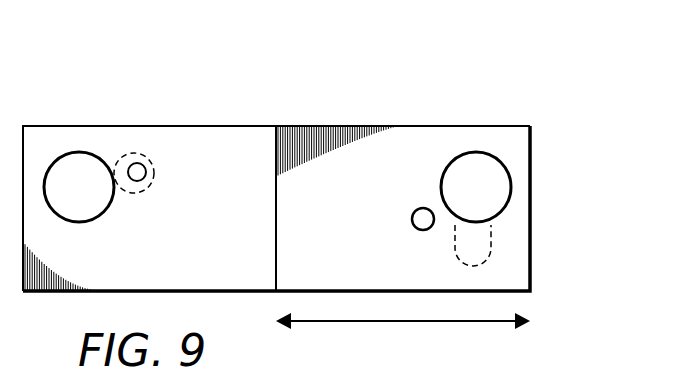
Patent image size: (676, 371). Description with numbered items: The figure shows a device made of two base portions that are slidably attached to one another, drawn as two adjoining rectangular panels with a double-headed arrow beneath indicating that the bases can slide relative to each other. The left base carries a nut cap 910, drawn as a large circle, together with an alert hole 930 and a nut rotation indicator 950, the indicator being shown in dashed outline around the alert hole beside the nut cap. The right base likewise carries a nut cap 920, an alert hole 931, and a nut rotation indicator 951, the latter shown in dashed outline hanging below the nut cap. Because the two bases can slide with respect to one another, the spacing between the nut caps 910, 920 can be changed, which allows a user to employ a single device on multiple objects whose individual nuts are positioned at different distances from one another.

The nut cap 910 is at (52, 160).
The nut cap 920 is at (455, 157).
The alert hole 930 is at (131, 166).
The alert hole 931 is at (413, 212).
The nut rotation indicator 950 is at (157, 176).
The nut rotation indicator 951 is at (490, 250).